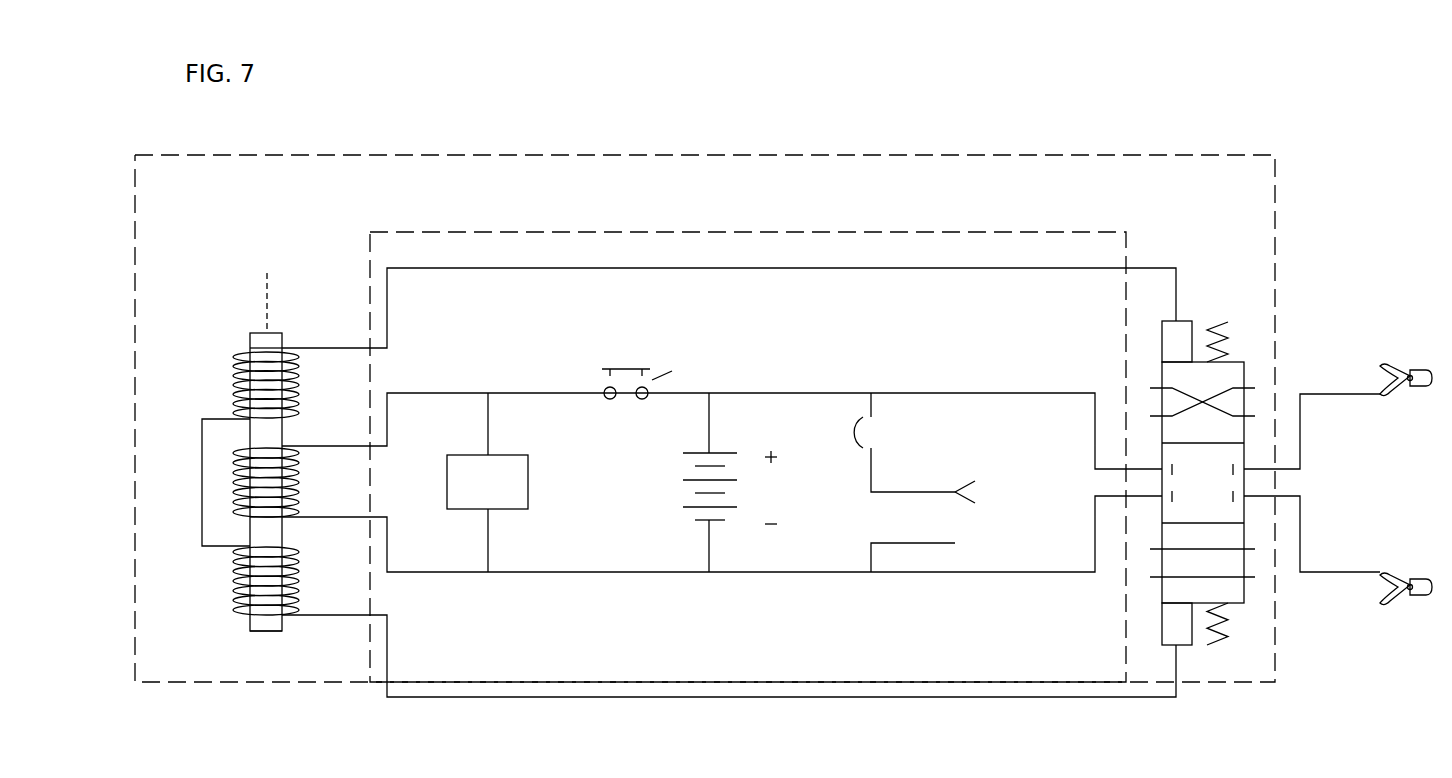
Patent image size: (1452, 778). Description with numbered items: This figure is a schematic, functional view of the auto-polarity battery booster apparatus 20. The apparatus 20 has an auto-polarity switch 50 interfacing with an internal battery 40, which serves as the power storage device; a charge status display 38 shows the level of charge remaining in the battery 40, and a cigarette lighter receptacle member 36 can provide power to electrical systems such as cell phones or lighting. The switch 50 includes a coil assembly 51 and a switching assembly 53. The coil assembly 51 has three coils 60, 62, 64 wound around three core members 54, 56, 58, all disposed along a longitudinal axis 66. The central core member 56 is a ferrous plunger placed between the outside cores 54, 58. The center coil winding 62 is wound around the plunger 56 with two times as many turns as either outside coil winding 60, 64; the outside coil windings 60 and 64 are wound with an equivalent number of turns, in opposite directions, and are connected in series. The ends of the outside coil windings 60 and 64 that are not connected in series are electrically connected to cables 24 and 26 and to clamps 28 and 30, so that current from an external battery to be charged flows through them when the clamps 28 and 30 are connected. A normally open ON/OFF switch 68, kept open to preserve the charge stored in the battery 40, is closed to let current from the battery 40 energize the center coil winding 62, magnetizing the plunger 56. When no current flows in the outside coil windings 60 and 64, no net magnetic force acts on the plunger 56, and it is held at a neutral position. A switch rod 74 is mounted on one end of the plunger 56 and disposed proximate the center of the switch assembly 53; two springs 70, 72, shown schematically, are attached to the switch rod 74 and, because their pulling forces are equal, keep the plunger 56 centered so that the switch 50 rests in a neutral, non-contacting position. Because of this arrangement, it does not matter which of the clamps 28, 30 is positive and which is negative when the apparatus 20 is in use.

The battery booster apparatus 20 is at (881, 120).
The electrical cable 24 is at (1325, 390).
The electrical cable 26 is at (1336, 575).
The clamp 28 is at (1420, 360).
The clamp 30 is at (1410, 600).
The cigarette lighter receptacle member 36 is at (978, 522).
The charge status display 38 is at (528, 481).
The battery 40 is at (730, 433).
The auto-polarity switch 50 is at (1124, 632).
The coil assembly 51 is at (233, 315).
The switching assembly 53 is at (1258, 328).
The outside core member 54 is at (275, 625).
The central core member (plunger) 56 is at (270, 510).
The outside core member 58 is at (278, 343).
The first outside coil winding 60 is at (227, 577).
The center coil winding 62 is at (227, 480).
The second outside coil winding 64 is at (227, 382).
The longitudinal axis 66 is at (269, 289).
The ON/OFF switch 68 is at (654, 381).
The spring 70 is at (1215, 318).
The spring 72 is at (1222, 652).
The switch rod 74 is at (1182, 640).